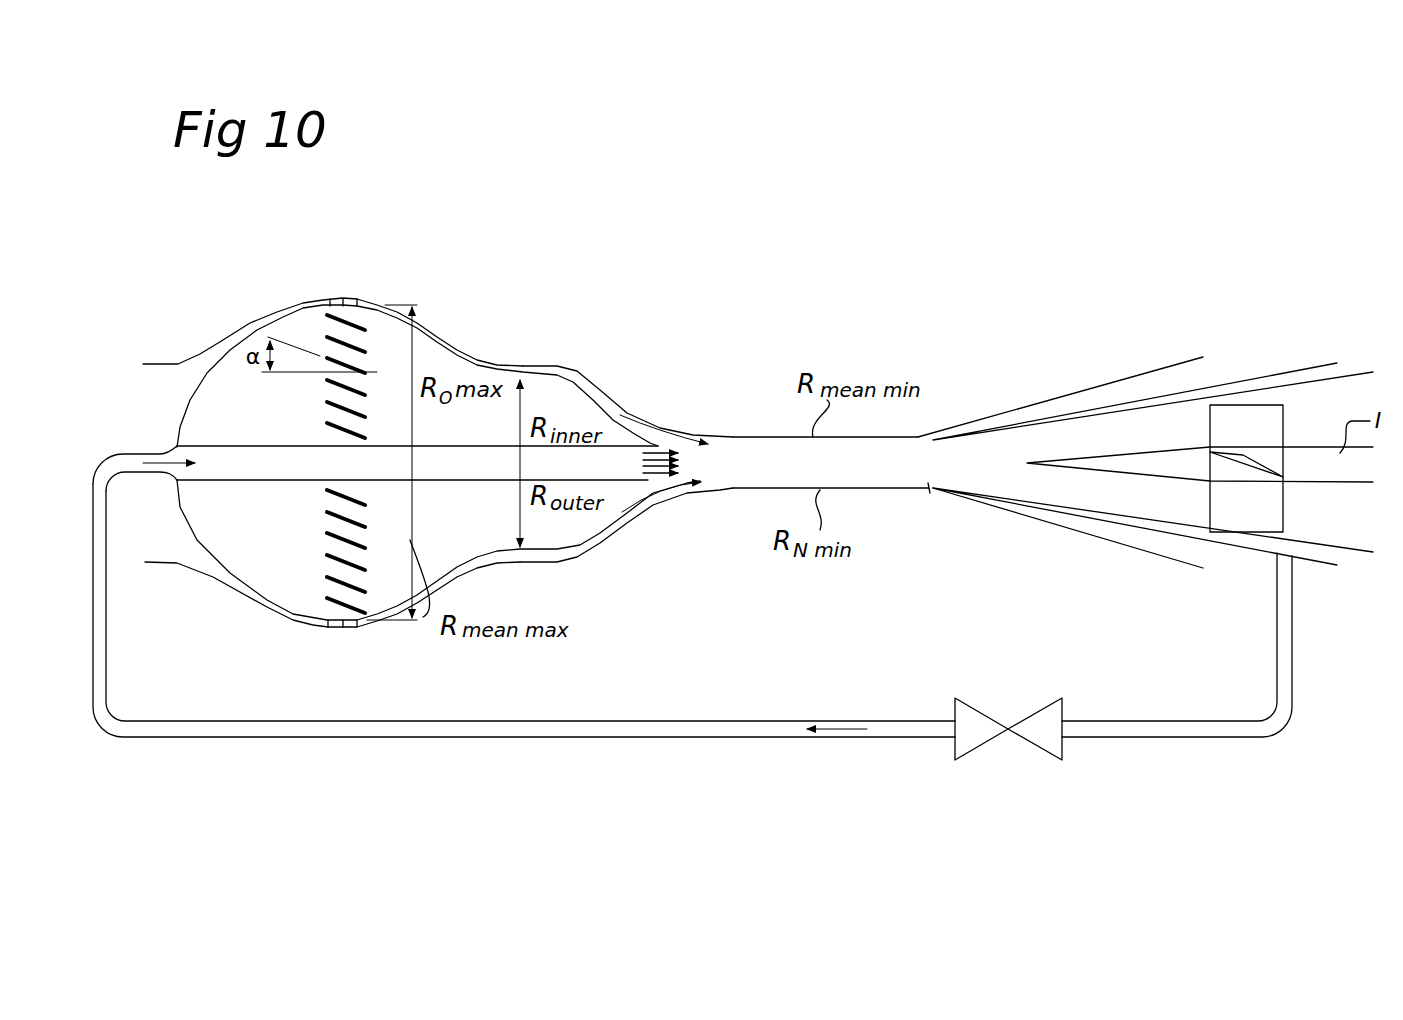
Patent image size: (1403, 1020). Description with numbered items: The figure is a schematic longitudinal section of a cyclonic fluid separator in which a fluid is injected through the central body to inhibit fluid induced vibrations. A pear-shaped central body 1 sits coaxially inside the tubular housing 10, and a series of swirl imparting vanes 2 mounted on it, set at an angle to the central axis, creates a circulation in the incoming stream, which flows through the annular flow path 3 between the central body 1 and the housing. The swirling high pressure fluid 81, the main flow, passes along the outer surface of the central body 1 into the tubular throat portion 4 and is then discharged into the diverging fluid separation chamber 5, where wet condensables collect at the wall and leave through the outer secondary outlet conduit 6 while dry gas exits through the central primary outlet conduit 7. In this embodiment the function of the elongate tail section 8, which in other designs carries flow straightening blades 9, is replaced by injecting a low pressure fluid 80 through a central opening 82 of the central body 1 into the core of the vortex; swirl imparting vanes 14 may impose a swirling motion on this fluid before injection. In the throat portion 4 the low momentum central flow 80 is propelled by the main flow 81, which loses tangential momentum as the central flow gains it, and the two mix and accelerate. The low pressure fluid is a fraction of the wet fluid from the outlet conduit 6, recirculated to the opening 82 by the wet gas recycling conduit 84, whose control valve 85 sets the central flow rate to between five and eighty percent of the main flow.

The central body 1 is at (303, 320).
The swirl imparting vanes 2 is at (328, 522).
The annular flow path 3 is at (448, 341).
The tubular throat portion 4 is at (728, 445).
The diverging fluid separation chamber 5 is at (927, 493).
The outer secondary outlet conduit 6 is at (1120, 393).
The central primary outlet conduit 7 is at (1193, 507).
The elongate tail section 8 is at (990, 457).
The flow straightening blades 9 is at (1255, 407).
The tubular housing 10 is at (645, 418).
The swirl imparting vanes 14 is at (1067, 415).
The low pressure fluid 80 is at (648, 478).
The high pressure swirling fluid 81 is at (693, 489).
The central opening 82 is at (205, 457).
The wet gas recycling conduit 84 is at (882, 730).
The control valve 85 is at (1032, 723).